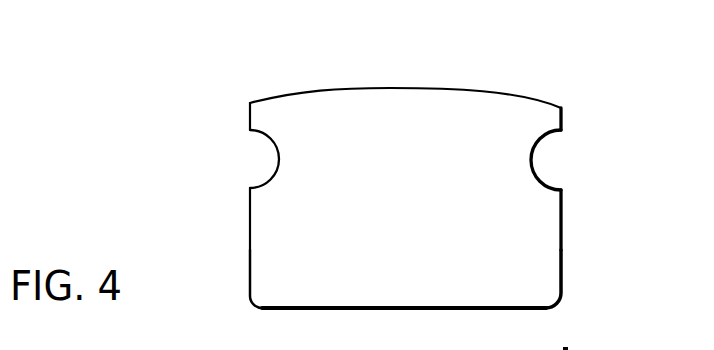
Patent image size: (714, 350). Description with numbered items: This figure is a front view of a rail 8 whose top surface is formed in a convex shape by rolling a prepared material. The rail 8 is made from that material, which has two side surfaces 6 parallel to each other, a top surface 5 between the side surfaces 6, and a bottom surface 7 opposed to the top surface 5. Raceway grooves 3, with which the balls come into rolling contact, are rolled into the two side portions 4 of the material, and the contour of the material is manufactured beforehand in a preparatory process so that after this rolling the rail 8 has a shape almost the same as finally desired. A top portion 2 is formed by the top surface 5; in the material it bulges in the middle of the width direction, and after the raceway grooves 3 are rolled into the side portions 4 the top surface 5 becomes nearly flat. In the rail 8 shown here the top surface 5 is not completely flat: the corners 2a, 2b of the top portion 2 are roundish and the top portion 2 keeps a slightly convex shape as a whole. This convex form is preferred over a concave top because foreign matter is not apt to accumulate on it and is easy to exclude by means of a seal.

The top portion 2 is at (428, 100).
The corner of the top portion 2a is at (268, 113).
The corner of the top portion 2b is at (557, 105).
The raceway groove 3 is at (263, 149).
The side portion 4 is at (263, 222).
The top surface 5 is at (367, 87).
The side surface 6 is at (253, 277).
The bottom surface 7 is at (425, 312).
The rail 8 is at (529, 78).